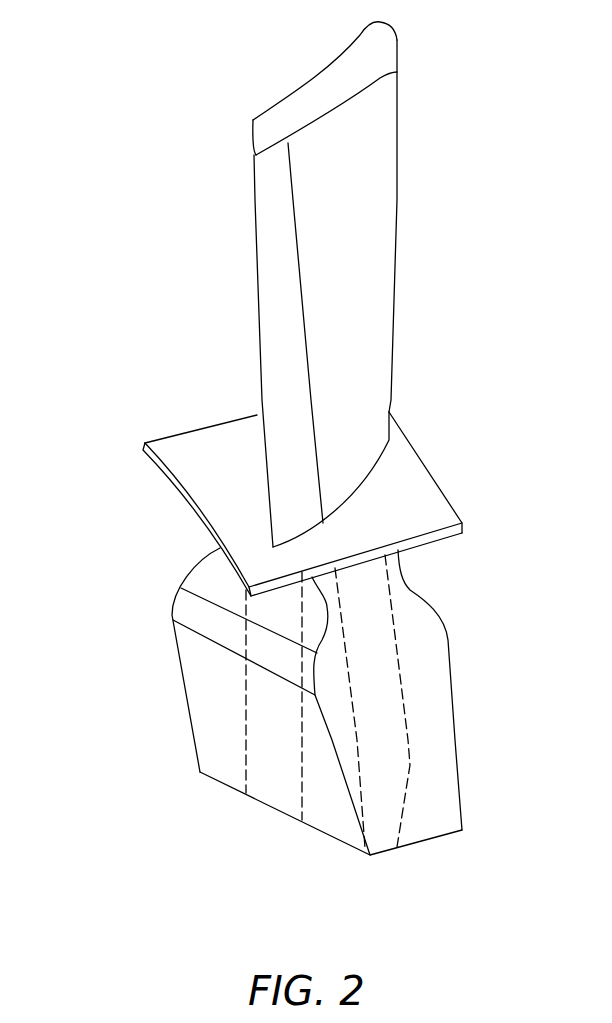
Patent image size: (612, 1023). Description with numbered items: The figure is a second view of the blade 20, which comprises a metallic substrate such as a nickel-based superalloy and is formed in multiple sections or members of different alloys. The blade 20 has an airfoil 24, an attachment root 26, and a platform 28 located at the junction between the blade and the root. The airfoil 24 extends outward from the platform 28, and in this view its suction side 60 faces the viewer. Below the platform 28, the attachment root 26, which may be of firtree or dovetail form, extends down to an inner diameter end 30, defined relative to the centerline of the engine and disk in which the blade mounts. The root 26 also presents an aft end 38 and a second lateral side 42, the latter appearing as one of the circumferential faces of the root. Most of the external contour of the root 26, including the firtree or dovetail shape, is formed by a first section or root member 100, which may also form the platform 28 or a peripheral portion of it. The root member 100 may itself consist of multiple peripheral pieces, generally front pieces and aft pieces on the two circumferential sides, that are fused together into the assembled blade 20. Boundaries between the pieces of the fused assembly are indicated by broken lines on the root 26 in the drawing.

The blade 20 is at (160, 98).
The airfoil 24 is at (208, 308).
The platform 28 is at (122, 450).
The attachment root 26 is at (150, 710).
The suction side 60 is at (364, 323).
The second lateral side 42 is at (235, 740).
The aft end 38 is at (410, 788).
The inner diameter end 30 is at (420, 842).
The root member 100 is at (438, 762).